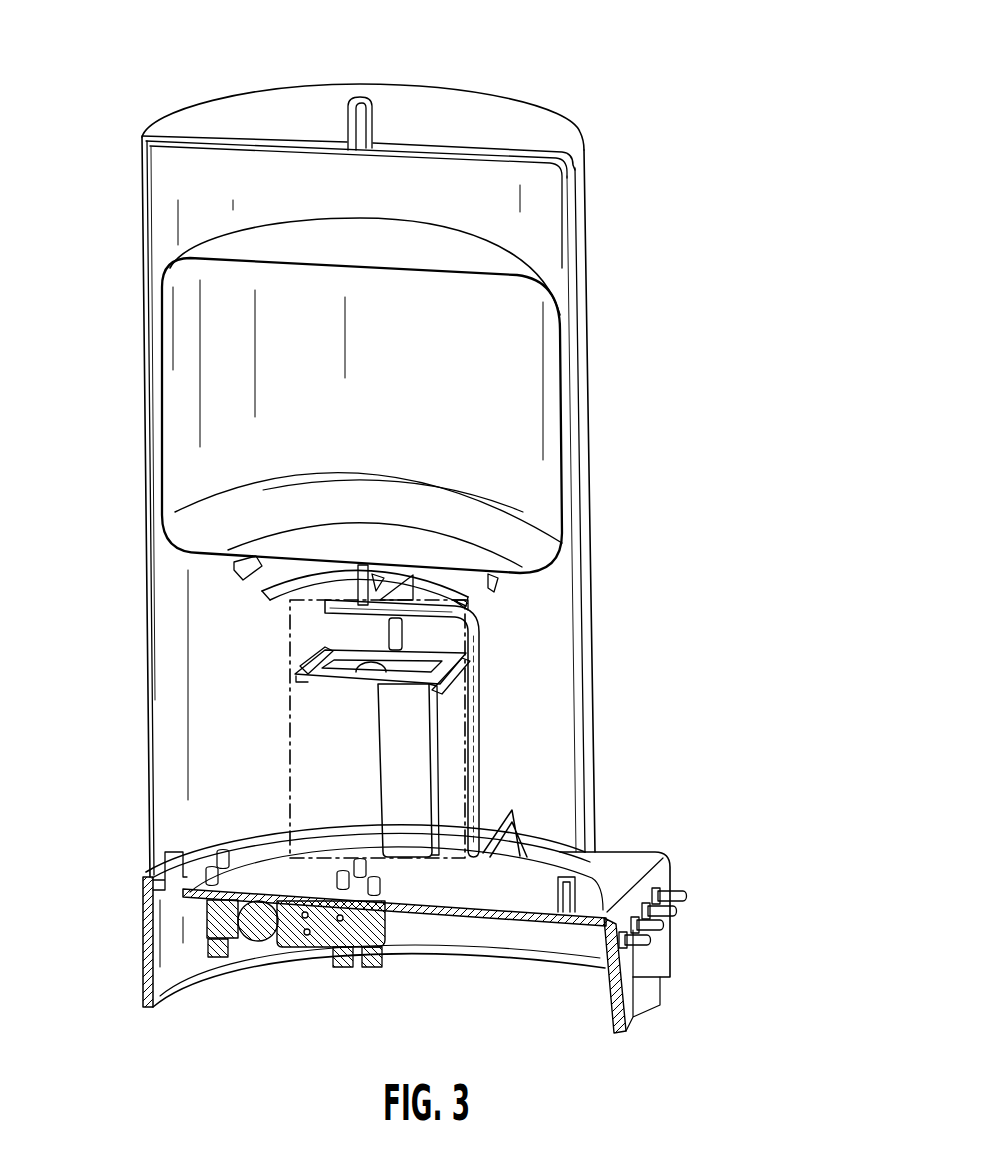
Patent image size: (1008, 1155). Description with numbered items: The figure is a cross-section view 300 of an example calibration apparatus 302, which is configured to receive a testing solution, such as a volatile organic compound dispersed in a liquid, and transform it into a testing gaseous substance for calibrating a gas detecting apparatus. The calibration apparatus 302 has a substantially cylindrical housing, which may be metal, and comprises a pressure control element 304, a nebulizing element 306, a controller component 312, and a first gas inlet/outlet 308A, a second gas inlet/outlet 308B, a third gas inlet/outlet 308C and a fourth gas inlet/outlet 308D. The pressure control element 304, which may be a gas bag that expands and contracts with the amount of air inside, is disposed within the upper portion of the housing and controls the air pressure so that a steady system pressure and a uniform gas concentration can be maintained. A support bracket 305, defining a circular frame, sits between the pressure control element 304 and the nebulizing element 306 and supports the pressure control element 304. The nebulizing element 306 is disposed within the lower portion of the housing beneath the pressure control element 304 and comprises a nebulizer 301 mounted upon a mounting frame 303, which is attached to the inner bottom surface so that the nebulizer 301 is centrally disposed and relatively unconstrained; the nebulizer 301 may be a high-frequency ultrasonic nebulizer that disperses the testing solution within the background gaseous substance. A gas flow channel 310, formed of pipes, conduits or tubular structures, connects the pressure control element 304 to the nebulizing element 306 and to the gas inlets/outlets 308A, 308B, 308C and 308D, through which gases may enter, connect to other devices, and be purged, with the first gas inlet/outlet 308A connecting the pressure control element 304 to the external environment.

The cross-section view 300 is at (557, 83).
The nebulizer 301 is at (347, 673).
The calibration apparatus 302 is at (185, 78).
The mounting frame 303 is at (421, 776).
The pressure control element 304 is at (393, 397).
The support bracket 305 is at (278, 590).
The nebulizing element 306 is at (288, 702).
The first gas inlet/outlet 308A is at (688, 897).
The second gas inlet/outlet 308B is at (678, 912).
The third gas inlet/outlet 308C is at (663, 930).
The fourth gas inlet/outlet 308D is at (650, 947).
The gas flow channel 310 is at (480, 717).
The controller component 312 is at (273, 967).